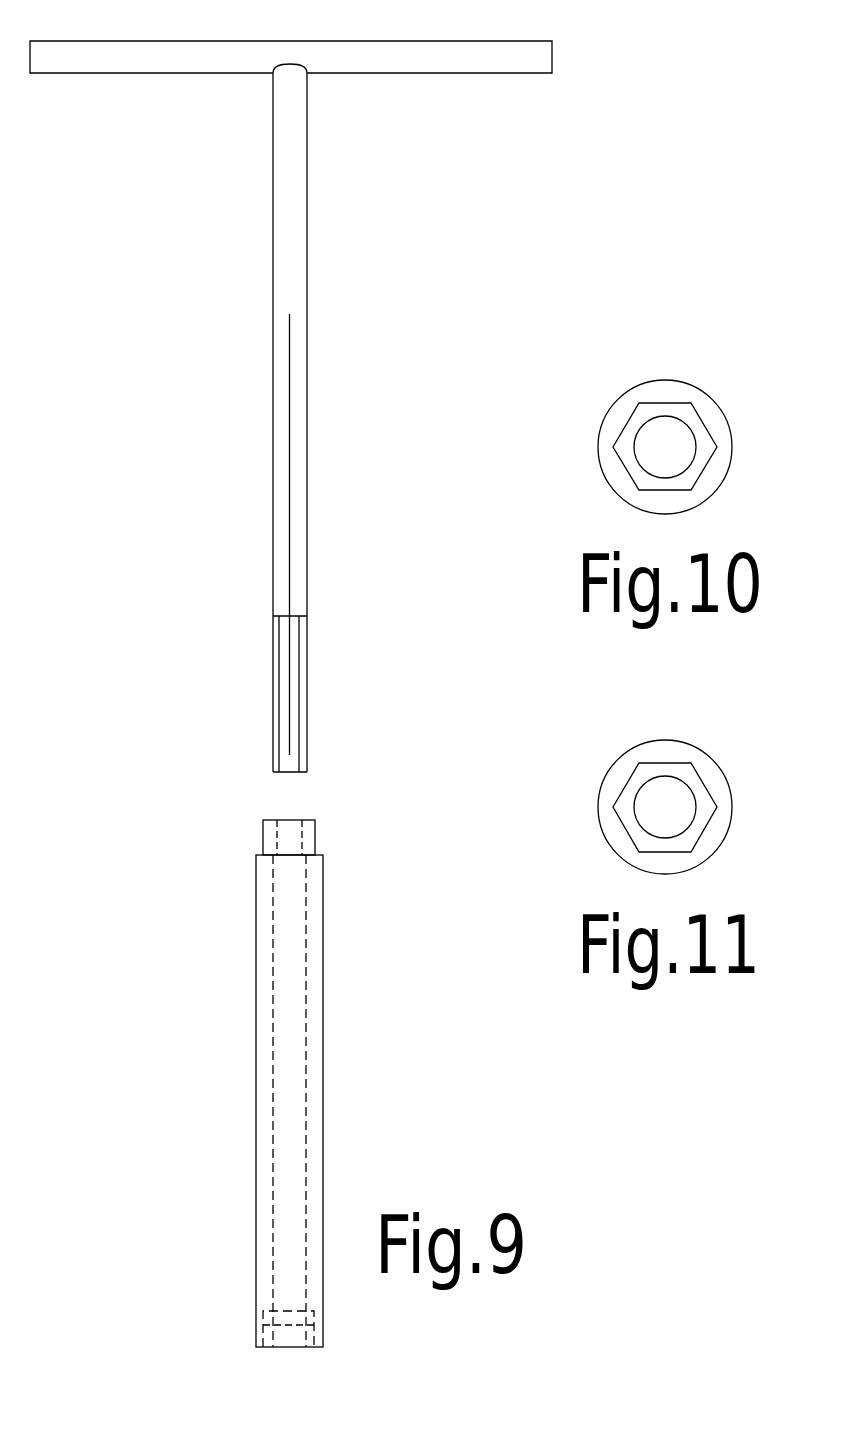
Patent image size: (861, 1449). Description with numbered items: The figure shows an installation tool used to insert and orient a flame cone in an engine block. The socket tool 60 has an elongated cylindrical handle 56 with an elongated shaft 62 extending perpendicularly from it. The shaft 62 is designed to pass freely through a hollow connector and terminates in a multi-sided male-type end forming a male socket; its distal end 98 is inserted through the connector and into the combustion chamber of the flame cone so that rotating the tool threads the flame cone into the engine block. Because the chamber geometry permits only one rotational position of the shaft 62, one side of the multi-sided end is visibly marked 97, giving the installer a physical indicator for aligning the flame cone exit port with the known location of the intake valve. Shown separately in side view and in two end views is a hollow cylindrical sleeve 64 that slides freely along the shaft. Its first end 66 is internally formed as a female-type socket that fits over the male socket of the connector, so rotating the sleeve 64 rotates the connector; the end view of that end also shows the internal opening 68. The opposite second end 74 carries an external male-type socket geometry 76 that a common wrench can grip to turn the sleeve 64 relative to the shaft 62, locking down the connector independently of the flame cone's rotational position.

In FIG. 9, the handle 56 is at (517, 41).
In FIG. 9, the socket tool 60 is at (183, 198).
In FIG. 9, the shaft 62 is at (298, 219).
In FIG. 9, the hollow cylindrical sleeve 64 is at (328, 1063).
In FIG. 10, the hollow cylindrical sleeve 64 is at (722, 492).
In FIG. 11, the hollow cylindrical sleeve 64 is at (608, 752).
In FIG. 9, the first end of sleeve 66 is at (323, 1295).
In FIG. 10, the first end of sleeve 66 is at (612, 406).
In FIG. 9, the bore 68 is at (272, 1325).
In FIG. 10, the bore 68 is at (684, 410).
In FIG. 9, the second end of sleeve 74 is at (263, 852).
In FIG. 11, the second end of sleeve 74 is at (725, 775).
In FIG. 9, the external male-type socket geometry 76 is at (311, 838).
In FIG. 11, the external male-type socket geometry 76 is at (702, 829).
In FIG. 9, the visible marking 97 is at (290, 697).
In FIG. 9, the distal end of the tool shaft 98 is at (308, 652).